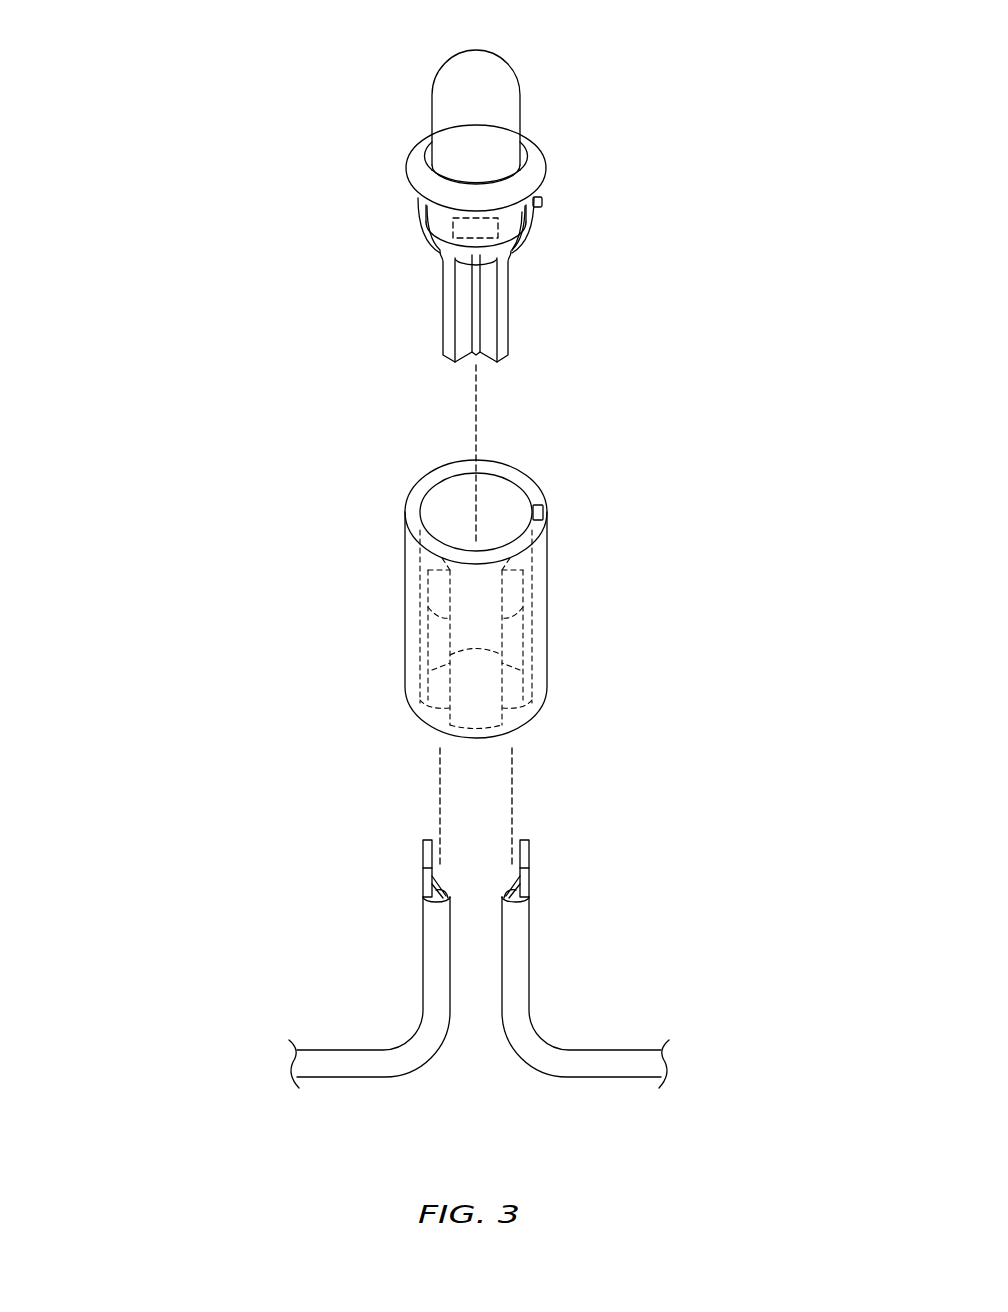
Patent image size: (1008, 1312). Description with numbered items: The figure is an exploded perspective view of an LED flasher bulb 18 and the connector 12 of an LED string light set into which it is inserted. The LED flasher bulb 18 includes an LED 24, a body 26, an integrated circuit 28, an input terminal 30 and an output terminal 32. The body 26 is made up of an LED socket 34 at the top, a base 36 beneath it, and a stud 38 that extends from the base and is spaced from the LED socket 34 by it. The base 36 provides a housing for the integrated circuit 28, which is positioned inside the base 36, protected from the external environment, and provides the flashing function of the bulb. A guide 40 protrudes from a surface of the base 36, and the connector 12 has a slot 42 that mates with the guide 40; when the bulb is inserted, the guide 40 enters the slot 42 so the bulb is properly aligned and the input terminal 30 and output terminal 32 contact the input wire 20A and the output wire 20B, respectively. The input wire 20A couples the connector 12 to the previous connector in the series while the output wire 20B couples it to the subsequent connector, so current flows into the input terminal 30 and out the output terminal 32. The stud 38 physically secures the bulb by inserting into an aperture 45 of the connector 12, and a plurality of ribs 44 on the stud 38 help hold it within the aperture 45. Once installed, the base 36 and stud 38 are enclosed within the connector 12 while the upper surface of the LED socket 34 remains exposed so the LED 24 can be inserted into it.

The connector 12 is at (548, 571).
The LED flasher bulb 18 is at (414, 39).
The input wire 20A is at (423, 886).
The output wire 20B is at (529, 886).
The LED 24 is at (505, 88).
The body 26 is at (391, 141).
The integrated circuit 28 is at (498, 222).
The input terminal 30 is at (428, 236).
The output terminal 32 is at (528, 246).
The LED socket 34 is at (538, 150).
The base 36 is at (418, 200).
The stud 38 is at (443, 300).
The guide 40 is at (543, 201).
The slot 42 is at (545, 511).
The ribs 44 is at (534, 345).
The aperture 45 is at (478, 600).